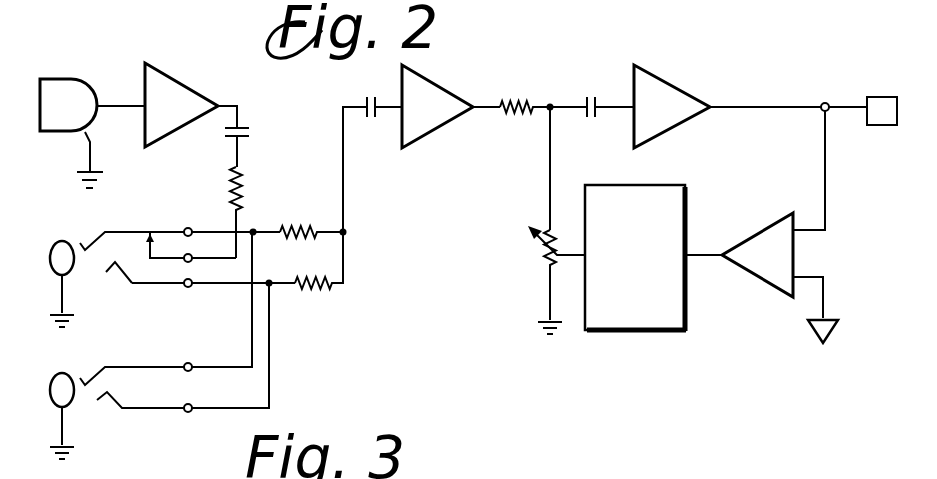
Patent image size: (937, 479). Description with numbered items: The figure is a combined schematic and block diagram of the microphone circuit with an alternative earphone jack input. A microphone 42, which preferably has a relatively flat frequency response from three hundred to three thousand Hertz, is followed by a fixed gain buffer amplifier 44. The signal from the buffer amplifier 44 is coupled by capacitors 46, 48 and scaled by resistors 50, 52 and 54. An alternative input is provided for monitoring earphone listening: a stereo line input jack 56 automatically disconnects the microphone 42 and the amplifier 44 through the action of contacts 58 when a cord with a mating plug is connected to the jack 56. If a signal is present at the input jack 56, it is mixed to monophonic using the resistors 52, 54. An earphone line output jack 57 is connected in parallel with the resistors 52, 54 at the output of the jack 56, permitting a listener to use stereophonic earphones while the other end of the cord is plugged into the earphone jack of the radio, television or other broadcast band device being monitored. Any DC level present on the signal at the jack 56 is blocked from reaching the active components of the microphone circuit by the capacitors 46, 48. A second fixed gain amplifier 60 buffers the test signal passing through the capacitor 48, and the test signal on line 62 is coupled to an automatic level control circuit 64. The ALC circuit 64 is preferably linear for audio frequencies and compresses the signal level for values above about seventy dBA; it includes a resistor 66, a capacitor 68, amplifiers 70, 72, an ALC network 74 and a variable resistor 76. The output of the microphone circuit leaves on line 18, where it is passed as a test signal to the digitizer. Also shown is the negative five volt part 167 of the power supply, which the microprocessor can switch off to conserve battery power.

The line 18 is at (847, 110).
The microphone 42 is at (86, 86).
The fixed gain buffer amplifier 44 is at (184, 82).
The capacitor 46 is at (243, 128).
The capacitor 48 is at (379, 118).
The resistor 50 is at (241, 190).
The resistor 52 is at (284, 228).
The resistor 54 is at (311, 288).
The stereo line input jack 56 is at (100, 293).
The earphone line output jack 57 is at (128, 428).
The contacts 58 is at (158, 212).
The second fixed gain amplifier 60 is at (438, 130).
The line 62 is at (481, 104).
The automatic level control circuit 64 is at (677, 69).
The resistor 66 is at (510, 116).
The capacitor 68 is at (592, 96).
The amplifier 70 is at (677, 134).
The amplifier 72 is at (745, 240).
The ALC network 74 is at (655, 332).
The variable resistor 76 is at (544, 262).
The −5 V part of the power supply 167 is at (824, 290).